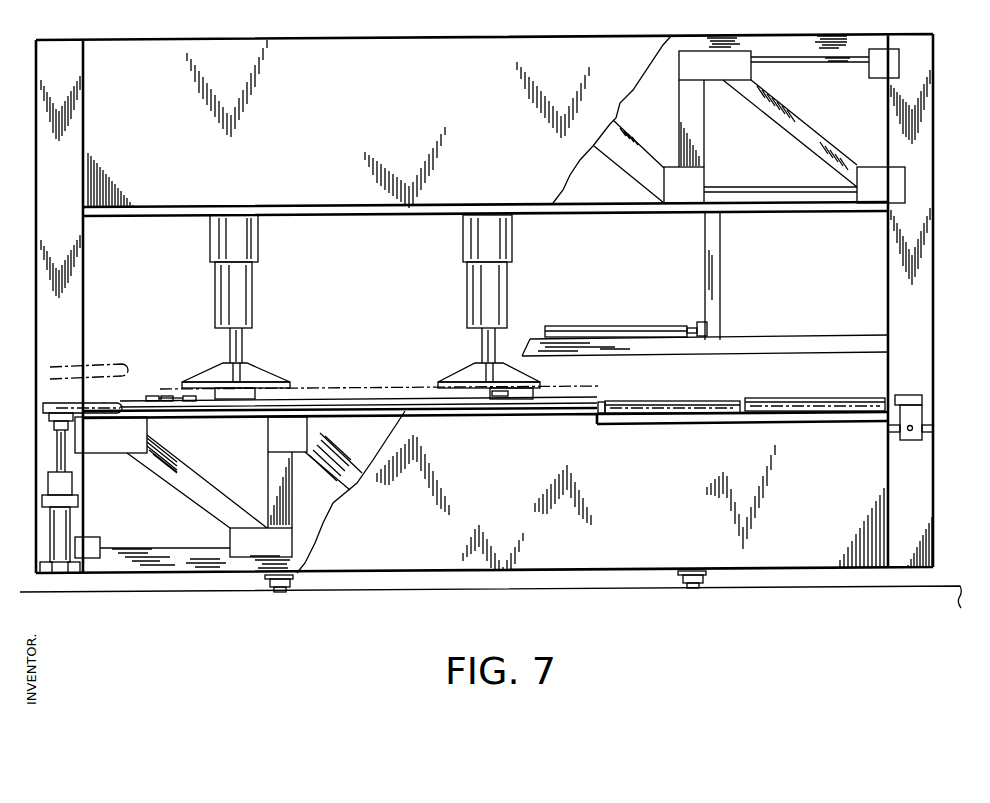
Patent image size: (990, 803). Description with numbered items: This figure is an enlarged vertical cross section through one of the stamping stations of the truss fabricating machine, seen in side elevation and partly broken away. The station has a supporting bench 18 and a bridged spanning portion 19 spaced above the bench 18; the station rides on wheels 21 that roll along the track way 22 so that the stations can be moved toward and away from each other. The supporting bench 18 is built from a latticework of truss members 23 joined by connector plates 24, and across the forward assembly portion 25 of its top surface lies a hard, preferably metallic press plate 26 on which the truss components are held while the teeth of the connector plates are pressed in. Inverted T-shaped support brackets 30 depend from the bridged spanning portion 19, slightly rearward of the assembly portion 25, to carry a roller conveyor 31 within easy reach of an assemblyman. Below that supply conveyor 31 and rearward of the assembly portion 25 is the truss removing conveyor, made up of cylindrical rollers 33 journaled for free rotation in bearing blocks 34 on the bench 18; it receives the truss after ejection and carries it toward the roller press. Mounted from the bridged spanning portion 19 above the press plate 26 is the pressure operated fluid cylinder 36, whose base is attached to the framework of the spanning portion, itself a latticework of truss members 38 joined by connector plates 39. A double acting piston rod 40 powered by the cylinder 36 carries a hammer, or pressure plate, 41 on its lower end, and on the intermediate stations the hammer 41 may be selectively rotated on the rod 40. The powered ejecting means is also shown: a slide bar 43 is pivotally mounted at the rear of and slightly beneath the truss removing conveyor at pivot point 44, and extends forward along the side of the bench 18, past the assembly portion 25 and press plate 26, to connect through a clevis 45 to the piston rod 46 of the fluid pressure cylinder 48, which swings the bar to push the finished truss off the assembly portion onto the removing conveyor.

The supporting bench 18 is at (507, 490).
The bridged spanning portion 19 is at (589, 213).
The wheels 21 is at (706, 583).
The track way 22 is at (693, 589).
The truss members 23 is at (273, 482).
The connector plates 24 is at (249, 558).
The assembly portion 25 is at (302, 400).
The press plate 26 is at (540, 401).
The support brackets 30 is at (650, 347).
The roller conveyor 31 is at (583, 328).
The cylindrical rollers 33 is at (735, 402).
The bearing blocks 34 is at (890, 398).
The pressure operated fluid cylinder 36 is at (478, 279).
The truss members 38 is at (793, 133).
The connector plates 39 is at (857, 188).
The double acting piston rod 40 is at (495, 346).
The hammer 41 is at (466, 374).
The slide bar 43 is at (915, 398).
The pivot point 44 is at (913, 428).
The clevis 45 is at (50, 430).
The piston rod 46 is at (57, 455).
The fluid pressure cylinder 48 is at (53, 522).